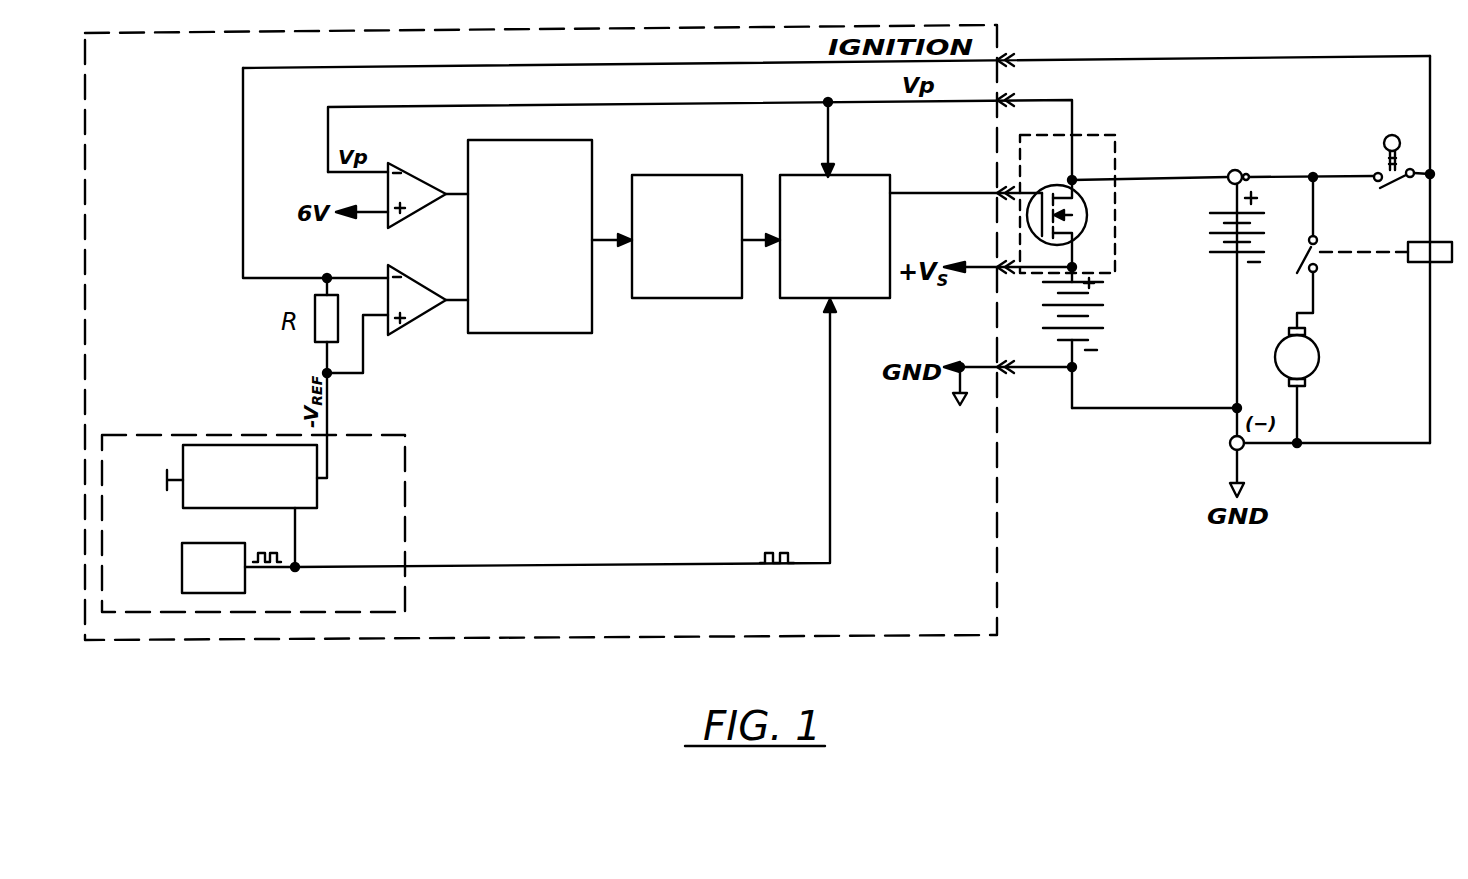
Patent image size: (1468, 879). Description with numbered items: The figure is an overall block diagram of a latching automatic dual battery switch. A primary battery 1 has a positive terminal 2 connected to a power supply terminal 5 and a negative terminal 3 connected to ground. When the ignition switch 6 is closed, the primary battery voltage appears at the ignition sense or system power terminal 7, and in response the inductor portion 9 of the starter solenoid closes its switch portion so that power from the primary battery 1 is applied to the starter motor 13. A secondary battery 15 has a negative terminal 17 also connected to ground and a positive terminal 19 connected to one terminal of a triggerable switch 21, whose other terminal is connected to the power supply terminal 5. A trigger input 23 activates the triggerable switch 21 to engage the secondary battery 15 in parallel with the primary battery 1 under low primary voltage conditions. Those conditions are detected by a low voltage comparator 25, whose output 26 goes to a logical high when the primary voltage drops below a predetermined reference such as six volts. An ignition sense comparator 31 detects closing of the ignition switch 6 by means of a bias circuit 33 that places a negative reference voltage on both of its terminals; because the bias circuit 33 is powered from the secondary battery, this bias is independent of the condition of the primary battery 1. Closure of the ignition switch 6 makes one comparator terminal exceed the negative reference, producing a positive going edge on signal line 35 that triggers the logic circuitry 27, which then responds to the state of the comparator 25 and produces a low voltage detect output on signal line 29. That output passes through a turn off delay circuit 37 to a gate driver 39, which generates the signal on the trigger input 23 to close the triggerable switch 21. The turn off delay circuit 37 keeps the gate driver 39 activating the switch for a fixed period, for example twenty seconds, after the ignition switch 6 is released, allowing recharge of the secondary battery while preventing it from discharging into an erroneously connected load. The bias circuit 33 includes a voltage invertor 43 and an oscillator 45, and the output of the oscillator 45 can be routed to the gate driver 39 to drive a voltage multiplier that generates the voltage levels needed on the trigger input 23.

The primary battery 1 is at (1223, 237).
The positive terminal 2 is at (1260, 187).
The negative terminal 3 is at (1252, 270).
The power supply terminal 5 is at (1218, 168).
The ignition switch 6 is at (1393, 184).
The ignition sense or system power terminal 7 is at (1430, 172).
The inductor portion of the starter solenoid 9 is at (1415, 263).
The starter motor 13 is at (1318, 359).
The secondary battery 15 is at (1075, 337).
The negative terminal 17 is at (1082, 352).
The positive terminal 19 is at (1040, 281).
The triggerable switch 21 is at (1113, 135).
The trigger input 23 is at (982, 192).
The low voltage comparator 25 is at (390, 163).
The output of comparator 26 is at (455, 190).
The logic circuitry 27 is at (532, 334).
The signal line 29 is at (604, 238).
The ignition sense comparator 31 is at (400, 333).
The bias circuit 33 is at (296, 523).
The signal line 35 is at (458, 303).
The turn off delay circuit 37 is at (690, 298).
The gate driver 39 is at (800, 298).
The voltage invertor 43 is at (316, 508).
The oscillator 45 is at (247, 582).